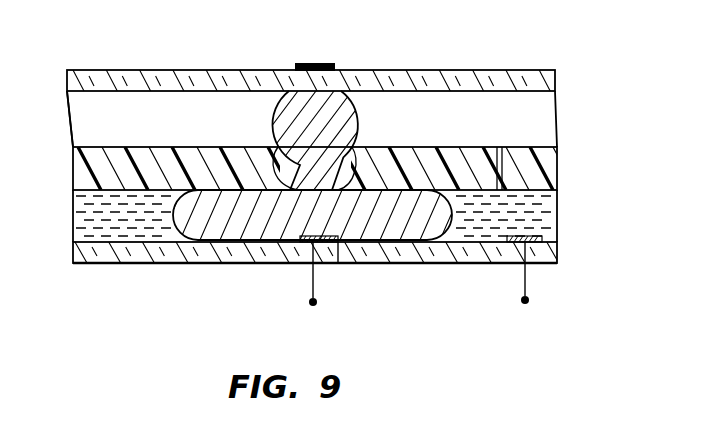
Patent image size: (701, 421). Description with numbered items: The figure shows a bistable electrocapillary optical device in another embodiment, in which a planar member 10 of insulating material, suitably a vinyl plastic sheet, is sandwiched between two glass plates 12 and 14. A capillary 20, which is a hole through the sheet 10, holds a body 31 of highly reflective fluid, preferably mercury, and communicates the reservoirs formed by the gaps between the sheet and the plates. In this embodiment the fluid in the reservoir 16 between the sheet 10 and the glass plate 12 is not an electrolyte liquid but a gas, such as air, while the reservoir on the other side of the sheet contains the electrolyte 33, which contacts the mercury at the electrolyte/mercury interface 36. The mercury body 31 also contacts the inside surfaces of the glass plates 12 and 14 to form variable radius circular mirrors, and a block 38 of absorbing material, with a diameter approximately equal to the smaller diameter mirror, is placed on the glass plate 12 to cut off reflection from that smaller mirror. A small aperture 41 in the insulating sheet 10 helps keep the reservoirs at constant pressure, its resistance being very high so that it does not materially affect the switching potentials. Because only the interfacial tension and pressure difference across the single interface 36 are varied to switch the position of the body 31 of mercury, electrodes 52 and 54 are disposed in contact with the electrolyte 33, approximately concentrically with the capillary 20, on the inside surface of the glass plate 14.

The planar member 10 is at (158, 147).
The glass plate 12 is at (496, 70).
The glass plate 14 is at (88, 265).
The gap 16 is at (73, 114).
The capillary 20 is at (357, 145).
The body of fluid 31 is at (233, 247).
The electrolyte 33 is at (556, 195).
The electrolyte/mercury interface 36 is at (170, 244).
The block of absorbing material 38 is at (310, 37).
The small aperture 41 is at (498, 147).
The electrode 52 is at (338, 242).
The electrode 54 is at (543, 262).